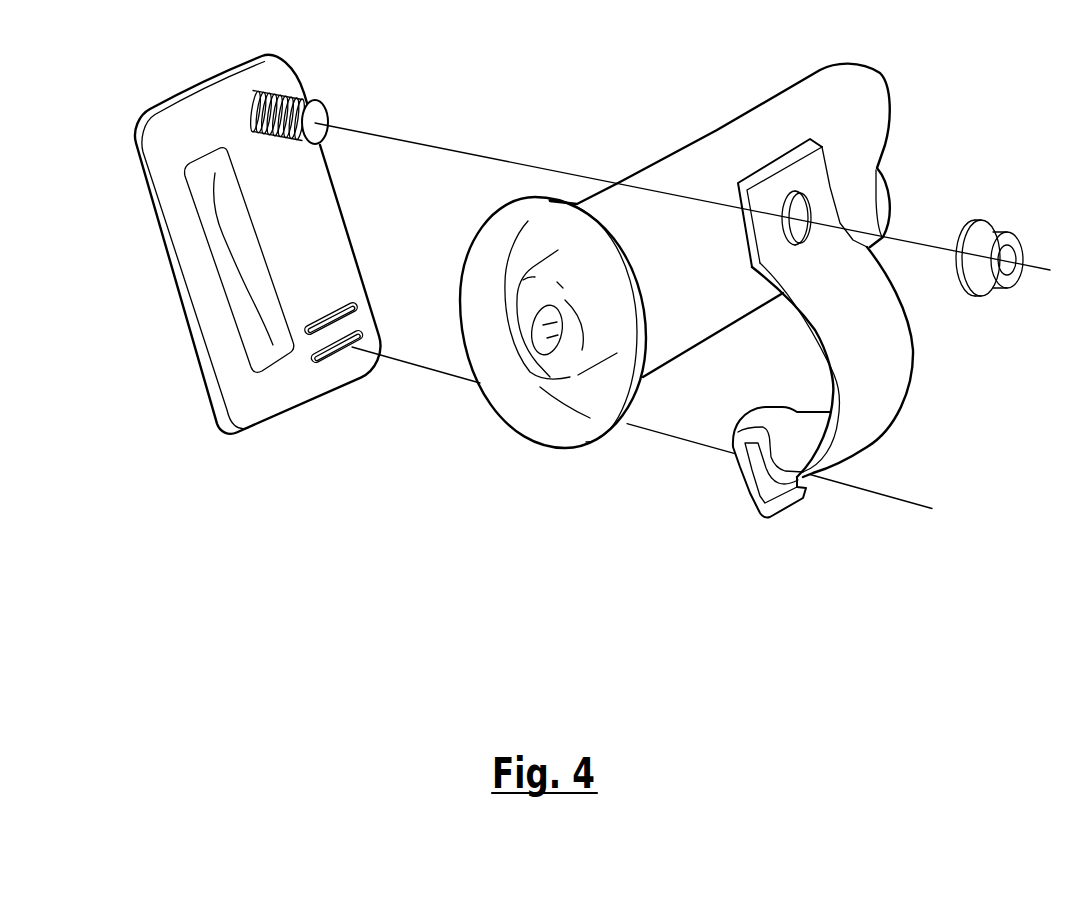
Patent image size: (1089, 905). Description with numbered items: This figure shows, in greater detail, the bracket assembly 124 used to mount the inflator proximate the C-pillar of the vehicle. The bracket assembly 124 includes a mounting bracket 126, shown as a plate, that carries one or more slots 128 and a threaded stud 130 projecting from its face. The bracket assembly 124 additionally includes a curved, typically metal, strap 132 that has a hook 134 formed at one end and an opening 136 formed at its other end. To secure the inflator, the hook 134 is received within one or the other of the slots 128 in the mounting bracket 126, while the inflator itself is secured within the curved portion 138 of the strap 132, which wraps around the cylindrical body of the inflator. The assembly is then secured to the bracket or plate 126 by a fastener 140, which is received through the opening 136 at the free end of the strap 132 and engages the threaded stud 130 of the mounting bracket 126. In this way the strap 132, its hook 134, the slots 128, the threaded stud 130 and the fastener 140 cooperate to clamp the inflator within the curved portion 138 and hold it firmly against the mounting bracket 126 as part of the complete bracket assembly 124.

The bracket assembly 124 is at (718, 307).
The mounting bracket 126 is at (234, 438).
The slots 128 is at (325, 363).
The threaded stud 130 is at (307, 102).
The strap 132 is at (883, 397).
The hook 134 is at (757, 495).
The opening 136 is at (790, 188).
The curved portion 138 is at (890, 325).
The fastener 140 is at (997, 222).